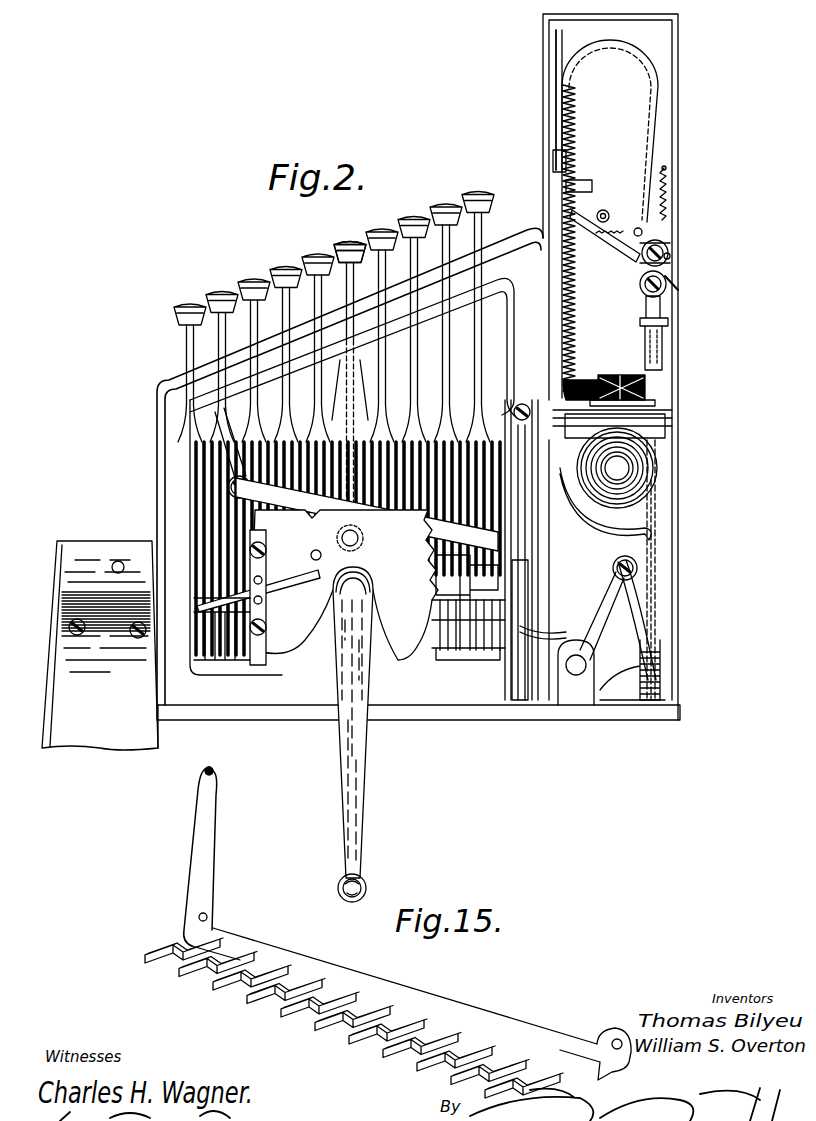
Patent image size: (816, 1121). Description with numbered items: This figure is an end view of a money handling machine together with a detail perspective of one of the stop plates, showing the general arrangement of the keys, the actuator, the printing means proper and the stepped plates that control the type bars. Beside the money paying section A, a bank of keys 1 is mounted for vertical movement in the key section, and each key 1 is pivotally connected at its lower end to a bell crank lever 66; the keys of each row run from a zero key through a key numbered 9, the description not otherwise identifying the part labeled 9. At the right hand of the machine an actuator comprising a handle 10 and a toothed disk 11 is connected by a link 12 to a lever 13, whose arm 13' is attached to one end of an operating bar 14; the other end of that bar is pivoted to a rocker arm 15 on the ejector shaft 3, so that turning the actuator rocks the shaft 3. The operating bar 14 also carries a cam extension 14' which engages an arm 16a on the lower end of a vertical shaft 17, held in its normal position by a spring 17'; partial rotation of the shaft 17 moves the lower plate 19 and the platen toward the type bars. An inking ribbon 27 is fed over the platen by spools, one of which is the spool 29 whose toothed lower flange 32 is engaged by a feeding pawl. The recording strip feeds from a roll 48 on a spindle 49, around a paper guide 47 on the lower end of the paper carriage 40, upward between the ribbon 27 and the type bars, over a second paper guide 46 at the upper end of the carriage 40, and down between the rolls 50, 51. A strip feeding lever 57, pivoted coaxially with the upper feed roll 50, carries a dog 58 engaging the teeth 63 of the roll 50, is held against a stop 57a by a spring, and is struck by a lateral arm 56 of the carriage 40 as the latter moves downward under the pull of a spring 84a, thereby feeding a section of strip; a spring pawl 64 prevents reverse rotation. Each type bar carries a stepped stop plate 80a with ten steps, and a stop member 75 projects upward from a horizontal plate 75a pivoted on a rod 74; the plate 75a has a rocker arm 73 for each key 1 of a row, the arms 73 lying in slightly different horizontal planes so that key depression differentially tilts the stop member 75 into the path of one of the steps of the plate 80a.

In FIG. 2, the keys 1 is at (252, 333).
In FIG. 2, the ejector shaft 3 is at (576, 672).
In FIG. 2, the block 9 is at (467, 602).
In FIG. 2, the handle 10 is at (368, 762).
In FIG. 2, the toothed disk 11 is at (317, 585).
In FIG. 2, the link 12 is at (348, 370).
In FIG. 2, the lever 13 is at (353, 348).
In FIG. 2, the arm of lever 13' is at (224, 435).
In FIG. 2, the operating bar 14 is at (367, 514).
In FIG. 2, the cam extension 14' is at (664, 618).
In FIG. 2, the rocker arm 15 is at (604, 584).
In FIG. 2, the arm 16a is at (630, 670).
In FIG. 2, the vertical shaft 17 is at (685, 570).
In FIG. 2, the spring 17' is at (664, 701).
In FIG. 2, the lower plate 19 is at (662, 426).
In FIG. 2, the inking ribbon 27 is at (582, 380).
In FIG. 2, the spool 29 is at (628, 380).
In FIG. 2, the lower flange 32 is at (660, 408).
In FIG. 2, the paper carriage 40 is at (560, 80).
In FIG. 2, the second paper guide 46 is at (620, 64).
In FIG. 2, the paper guide 47 is at (605, 507).
In FIG. 2, the recording strip roll 48 is at (655, 170).
In FIG. 2, the spindle 49 is at (658, 468).
In FIG. 2, the upper feed roll 50 is at (668, 244).
In FIG. 2, the roll 51 is at (645, 320).
In FIG. 2, the lateral arm 56 is at (584, 184).
In FIG. 2, the strip feeding lever 57 is at (586, 228).
In FIG. 2, the stop 57a is at (604, 210).
In FIG. 2, the dog 58 is at (651, 225).
In FIG. 2, the teeth 63 is at (672, 258).
In FIG. 2, the spring pawl 64 is at (672, 282).
In FIG. 2, the bell crank lever 66 is at (462, 662).
In FIG. 15, the rocker arm 73 is at (272, 1008).
In FIG. 15, the rod 74 is at (210, 920).
In FIG. 2, the stop member 75 is at (565, 638).
In FIG. 15, the stop member 75 is at (210, 836).
In FIG. 15, the horizontal plate 75a is at (305, 985).
In FIG. 2, the stop plate 80a is at (514, 546).
In FIG. 2, the spring 84a is at (586, 320).
In FIG. 2, the money paying section A is at (160, 379).